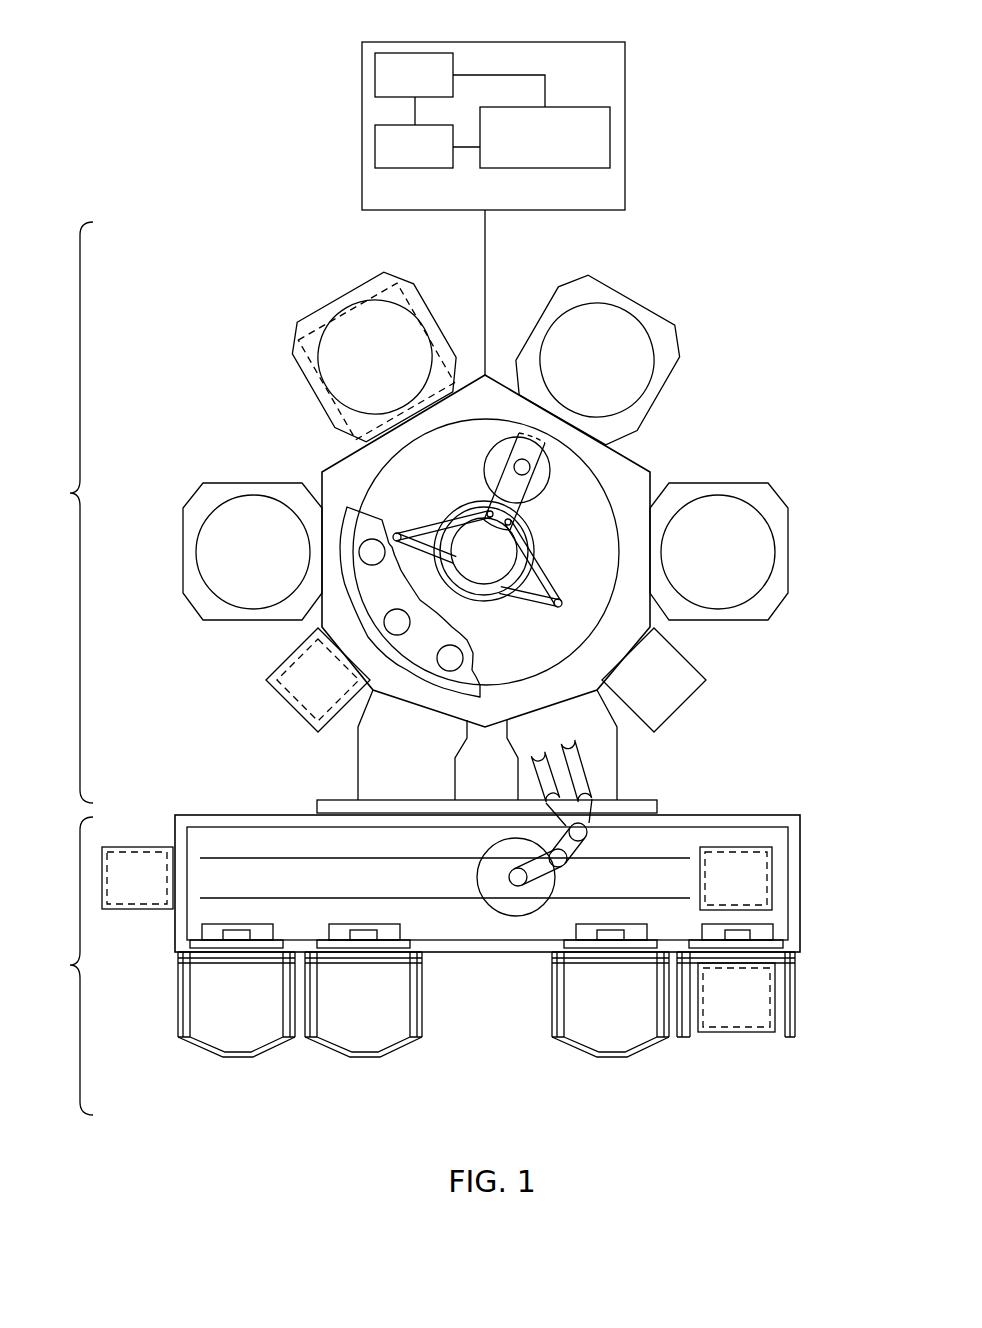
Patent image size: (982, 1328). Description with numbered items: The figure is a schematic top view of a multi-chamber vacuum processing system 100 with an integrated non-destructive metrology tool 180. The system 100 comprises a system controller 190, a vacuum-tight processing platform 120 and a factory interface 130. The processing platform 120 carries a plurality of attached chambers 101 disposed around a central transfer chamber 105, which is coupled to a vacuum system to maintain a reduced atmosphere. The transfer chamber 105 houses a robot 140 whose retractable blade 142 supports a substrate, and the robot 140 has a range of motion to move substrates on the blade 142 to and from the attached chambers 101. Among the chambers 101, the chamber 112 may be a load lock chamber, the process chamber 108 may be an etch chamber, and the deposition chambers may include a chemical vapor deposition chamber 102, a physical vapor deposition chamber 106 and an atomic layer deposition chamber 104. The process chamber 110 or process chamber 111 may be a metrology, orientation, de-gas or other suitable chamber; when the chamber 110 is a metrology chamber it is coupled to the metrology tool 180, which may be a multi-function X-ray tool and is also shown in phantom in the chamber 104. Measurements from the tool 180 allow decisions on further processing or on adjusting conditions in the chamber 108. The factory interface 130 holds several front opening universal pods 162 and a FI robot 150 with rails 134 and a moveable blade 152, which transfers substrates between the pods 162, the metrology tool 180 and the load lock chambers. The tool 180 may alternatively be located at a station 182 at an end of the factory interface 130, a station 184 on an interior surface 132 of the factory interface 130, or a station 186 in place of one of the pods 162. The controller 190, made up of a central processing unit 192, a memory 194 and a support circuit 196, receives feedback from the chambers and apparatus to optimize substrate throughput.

The multi-chamber vacuum processing system 100 is at (752, 306).
The attached chambers 101 is at (465, 520).
The chemical vapor deposition chamber 102 is at (782, 610).
The atomic layer deposition chamber 104 is at (303, 381).
The transfer chamber 105 is at (532, 645).
The physical vapor deposition chamber 106 is at (670, 378).
The process chamber 108 is at (229, 482).
The process chamber 110 is at (290, 667).
The process chamber 111 is at (685, 707).
The load lock chamber 112 is at (358, 780).
The vacuum-tight processing platform 120 is at (59, 512).
The factory interface 130 is at (58, 966).
The interior surface 132 is at (672, 840).
The rails 134 is at (280, 858).
The robot 140 is at (554, 598).
The retractable blade 142 is at (503, 468).
The FI robot 150 is at (586, 855).
The moveable blade 152 is at (533, 784).
The front opening universal pods 162 is at (236, 1057).
The metrology tool 180 is at (334, 424).
The station 182 is at (128, 910).
The station 184 is at (772, 868).
The station 186 is at (735, 1032).
The system controller 190 is at (565, 42).
The central processing unit 192 is at (424, 52).
The memory 194 is at (375, 136).
The support circuit 196 is at (583, 107).